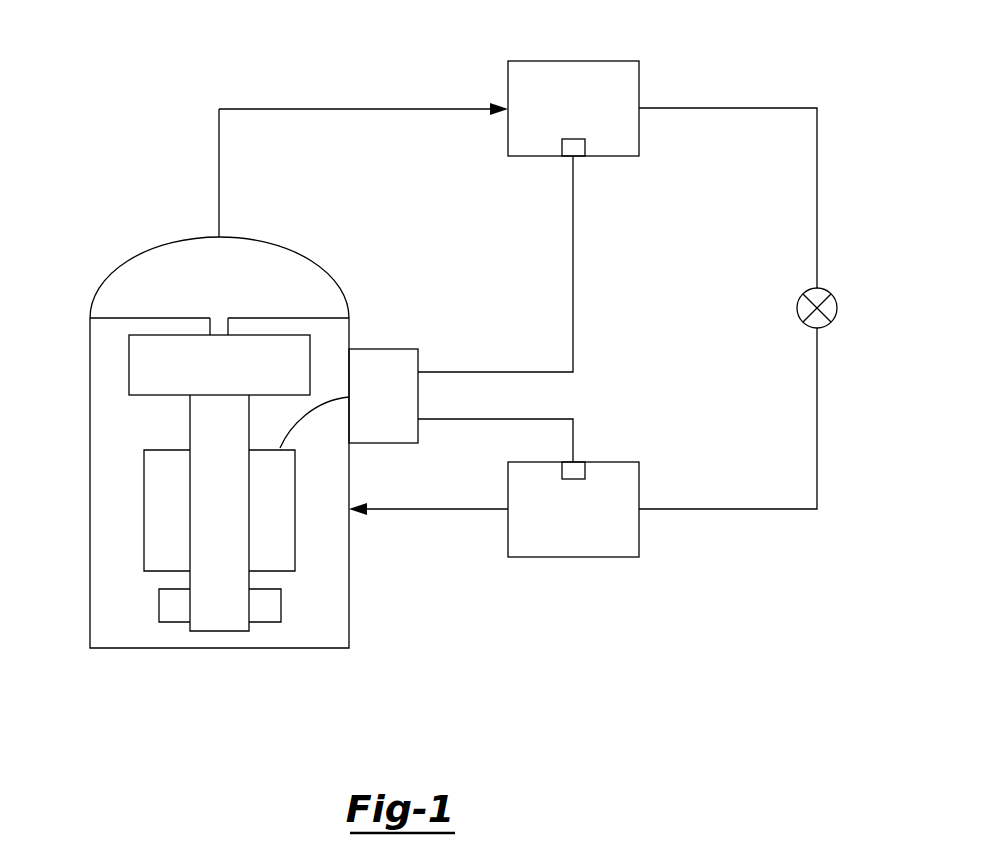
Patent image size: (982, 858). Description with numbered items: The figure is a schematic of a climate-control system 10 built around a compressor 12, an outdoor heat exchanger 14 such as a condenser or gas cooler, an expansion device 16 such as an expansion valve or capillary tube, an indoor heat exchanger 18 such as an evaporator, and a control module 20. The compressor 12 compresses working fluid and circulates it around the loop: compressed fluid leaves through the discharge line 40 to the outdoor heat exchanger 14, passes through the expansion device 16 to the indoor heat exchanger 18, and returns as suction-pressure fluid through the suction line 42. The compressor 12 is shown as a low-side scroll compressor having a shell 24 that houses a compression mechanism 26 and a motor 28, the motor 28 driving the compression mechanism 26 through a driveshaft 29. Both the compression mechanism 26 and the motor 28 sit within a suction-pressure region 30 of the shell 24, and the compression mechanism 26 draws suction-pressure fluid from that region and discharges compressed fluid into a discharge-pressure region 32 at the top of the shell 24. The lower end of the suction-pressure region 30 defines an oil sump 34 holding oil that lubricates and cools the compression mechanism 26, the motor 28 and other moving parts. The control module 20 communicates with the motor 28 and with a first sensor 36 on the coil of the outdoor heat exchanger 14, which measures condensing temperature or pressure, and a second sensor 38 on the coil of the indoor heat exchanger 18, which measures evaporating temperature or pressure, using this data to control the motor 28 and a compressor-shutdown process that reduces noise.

The climate-control system 10 is at (751, 58).
The compressor 12 is at (157, 235).
The outdoor heat exchanger 14 is at (598, 61).
The expansion device 16 is at (797, 308).
The indoor heat exchanger 18 is at (598, 557).
The control module 20 is at (383, 349).
The shell 24 is at (90, 465).
The compression mechanism 26 is at (129, 363).
The motor 28 is at (144, 543).
The driveshaft 29 is at (213, 617).
The suction-pressure region 30 is at (110, 418).
The discharge-pressure region 32 is at (122, 282).
The oil sump 34 is at (313, 632).
The first sensor 36 is at (585, 147).
The second sensor 38 is at (585, 470).
The discharge line 40 is at (363, 108).
The suction line 42 is at (428, 510).